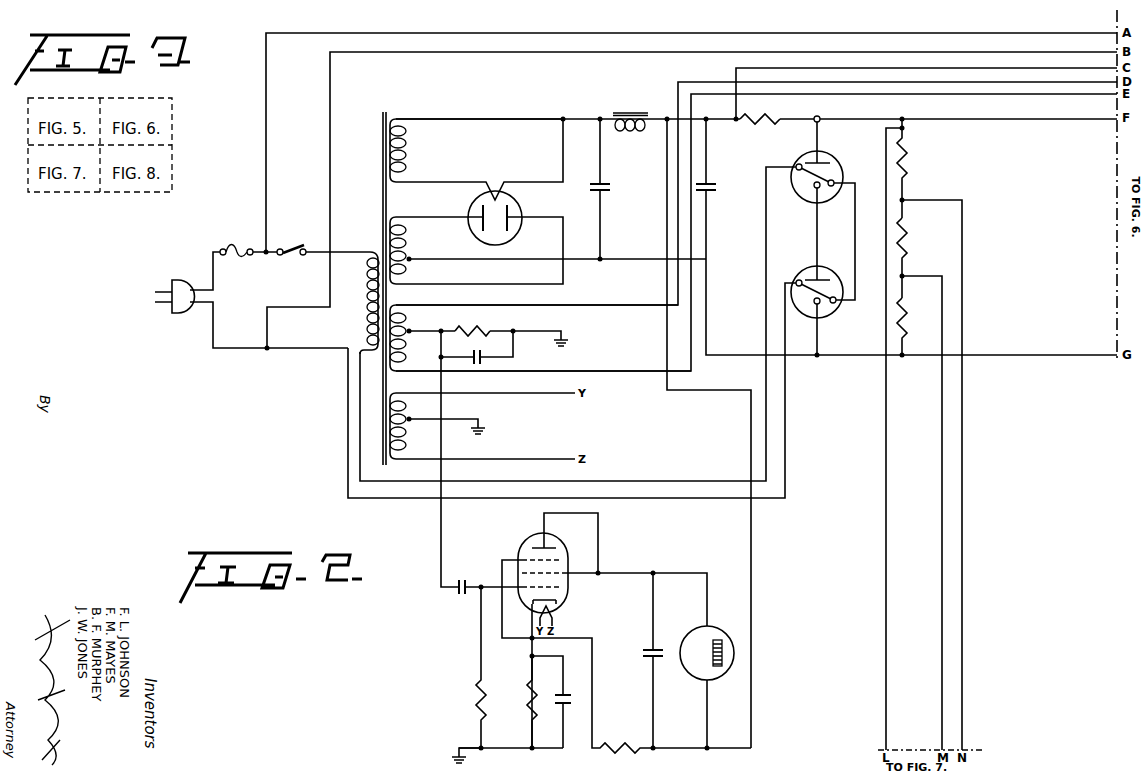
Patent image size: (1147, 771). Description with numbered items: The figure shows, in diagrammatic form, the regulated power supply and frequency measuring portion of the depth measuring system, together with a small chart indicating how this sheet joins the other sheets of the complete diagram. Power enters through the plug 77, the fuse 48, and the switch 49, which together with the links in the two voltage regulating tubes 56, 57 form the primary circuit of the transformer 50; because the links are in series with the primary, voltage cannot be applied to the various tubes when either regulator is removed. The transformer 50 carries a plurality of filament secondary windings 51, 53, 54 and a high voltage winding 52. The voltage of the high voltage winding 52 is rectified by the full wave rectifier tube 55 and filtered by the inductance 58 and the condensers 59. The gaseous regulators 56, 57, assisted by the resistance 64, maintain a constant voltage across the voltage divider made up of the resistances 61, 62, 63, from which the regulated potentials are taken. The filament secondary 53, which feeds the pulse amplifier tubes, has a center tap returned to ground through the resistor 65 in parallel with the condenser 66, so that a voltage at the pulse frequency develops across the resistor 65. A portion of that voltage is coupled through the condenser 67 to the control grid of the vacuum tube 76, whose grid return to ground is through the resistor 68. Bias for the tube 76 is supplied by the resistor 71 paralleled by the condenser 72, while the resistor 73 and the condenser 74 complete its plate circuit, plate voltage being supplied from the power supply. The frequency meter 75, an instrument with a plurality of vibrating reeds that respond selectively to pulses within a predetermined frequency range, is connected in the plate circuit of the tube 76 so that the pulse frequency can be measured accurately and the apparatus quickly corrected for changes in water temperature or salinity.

The fuse 48 is at (234, 250).
The switch 49 is at (293, 248).
The transformer 50 is at (374, 245).
The filament secondary winding 51 is at (407, 143).
The high voltage winding 52 is at (407, 240).
The filament secondary winding 53 is at (407, 316).
The filament secondary winding 54 is at (407, 444).
The full wave rectifier tube 55 is at (520, 207).
The voltage regulating tube 56 is at (833, 158).
The voltage regulating tube 57 is at (833, 314).
The inductance 58 is at (630, 112).
The condensers 59 is at (719, 198).
The resistance 61 is at (906, 157).
The resistance 62 is at (906, 240).
The resistance 63 is at (906, 318).
The resistance 64 is at (760, 133).
The resistor 65 is at (469, 327).
The condenser 66 is at (489, 352).
The condenser 67 is at (455, 596).
The resistor 68 is at (476, 700).
The resistor 71 is at (527, 700).
The condenser 72 is at (566, 697).
The resistor 73 is at (618, 745).
The condenser 74 is at (650, 650).
The frequency meter 75 is at (712, 628).
The vacuum tube 76 is at (558, 546).
The plug 77 is at (182, 316).